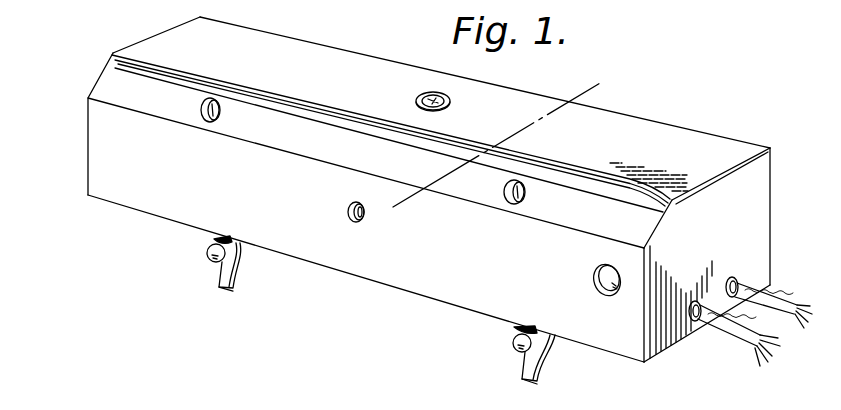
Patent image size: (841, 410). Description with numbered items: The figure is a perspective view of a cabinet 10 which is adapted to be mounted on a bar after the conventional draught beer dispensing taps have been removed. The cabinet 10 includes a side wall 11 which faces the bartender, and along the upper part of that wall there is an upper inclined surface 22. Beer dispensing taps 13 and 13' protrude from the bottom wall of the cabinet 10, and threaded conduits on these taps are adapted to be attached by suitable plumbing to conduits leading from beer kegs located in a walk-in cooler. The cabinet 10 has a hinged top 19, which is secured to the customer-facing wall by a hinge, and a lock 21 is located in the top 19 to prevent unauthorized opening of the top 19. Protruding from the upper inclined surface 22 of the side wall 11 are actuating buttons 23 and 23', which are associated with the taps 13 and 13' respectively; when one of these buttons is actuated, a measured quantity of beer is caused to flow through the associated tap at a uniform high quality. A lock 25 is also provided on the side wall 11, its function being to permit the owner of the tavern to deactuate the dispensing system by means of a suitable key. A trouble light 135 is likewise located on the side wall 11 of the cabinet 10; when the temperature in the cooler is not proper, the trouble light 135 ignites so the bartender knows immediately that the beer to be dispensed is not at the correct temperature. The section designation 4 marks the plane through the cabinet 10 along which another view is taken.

The cabinet 10 is at (729, 136).
The side wall 11 is at (402, 283).
The beer dispensing tap 13 is at (550, 363).
The beer dispensing tap 13' is at (247, 271).
The hinged top 19 is at (296, 44).
The lock 21 is at (451, 104).
The upper inclined surface 22 is at (107, 77).
The actuating button 23 is at (498, 212).
The actuating button 23' is at (174, 128).
The lock 25 is at (348, 212).
The trouble light 135 is at (594, 281).
The section line 4- 4 is at (578, 57).